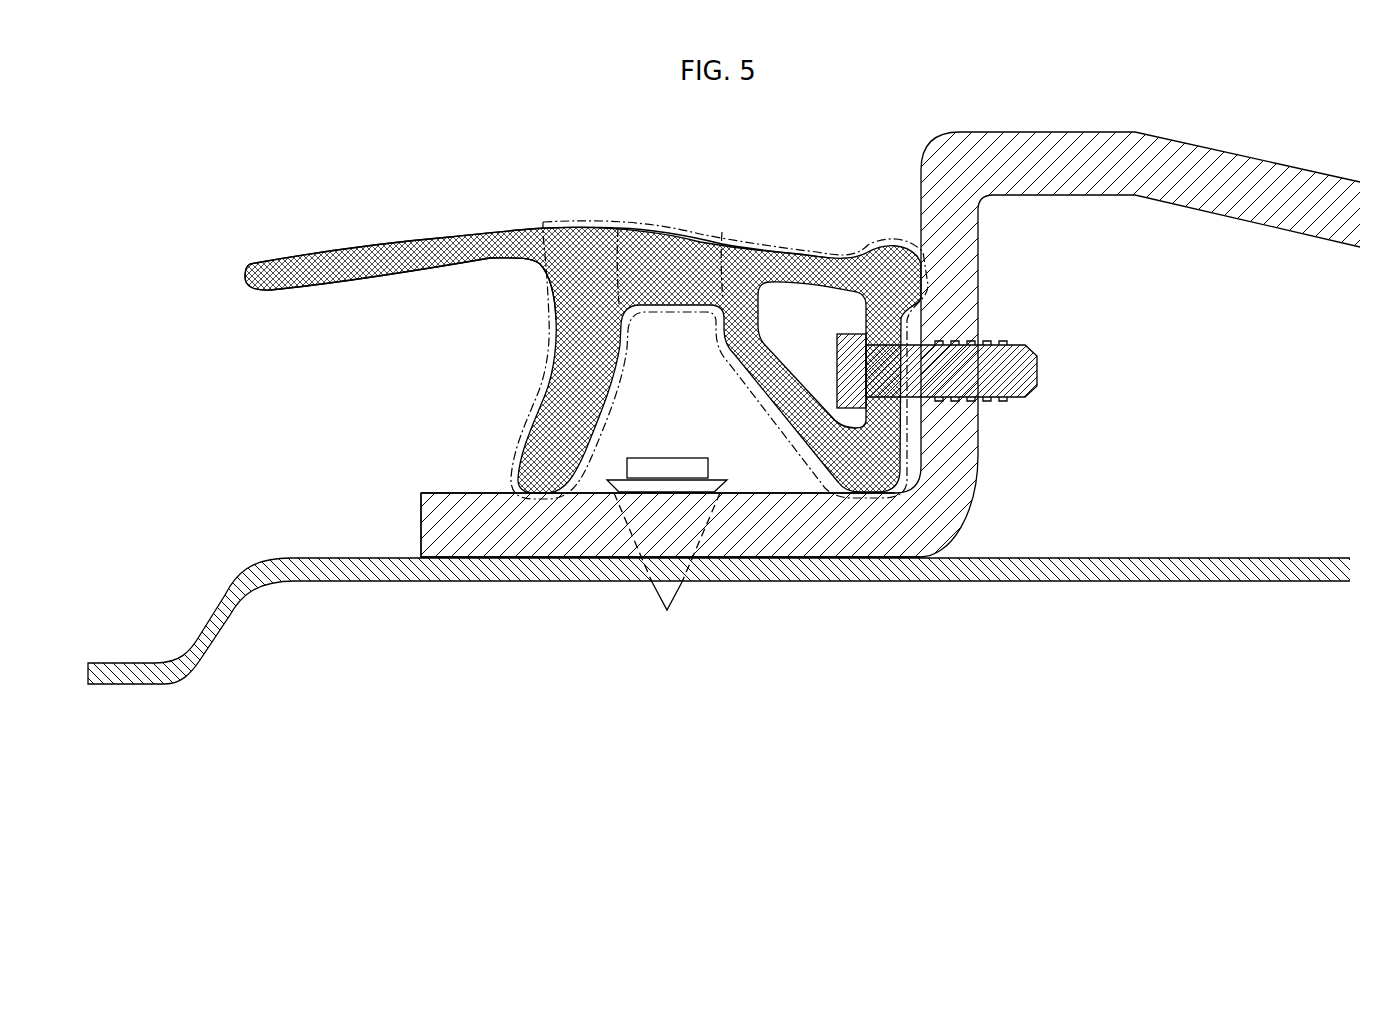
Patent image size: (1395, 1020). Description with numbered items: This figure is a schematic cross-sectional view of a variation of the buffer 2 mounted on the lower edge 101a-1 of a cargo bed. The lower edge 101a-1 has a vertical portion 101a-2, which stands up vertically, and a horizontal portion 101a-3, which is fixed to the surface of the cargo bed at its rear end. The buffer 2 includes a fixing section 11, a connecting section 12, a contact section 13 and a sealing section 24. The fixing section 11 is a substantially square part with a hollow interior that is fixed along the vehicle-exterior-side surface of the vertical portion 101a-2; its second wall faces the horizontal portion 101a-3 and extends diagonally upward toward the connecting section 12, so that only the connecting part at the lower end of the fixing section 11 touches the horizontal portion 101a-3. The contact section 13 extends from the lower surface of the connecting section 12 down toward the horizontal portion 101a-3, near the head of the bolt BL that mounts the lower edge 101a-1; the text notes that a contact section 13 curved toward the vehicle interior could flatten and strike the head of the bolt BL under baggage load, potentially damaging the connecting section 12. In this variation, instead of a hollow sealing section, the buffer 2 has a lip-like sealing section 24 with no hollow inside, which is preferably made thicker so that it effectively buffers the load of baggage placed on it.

The buffer 2 is at (795, 160).
The fixing section 11 is at (823, 243).
The connecting section 12 is at (683, 224).
The contact section 13 is at (578, 222).
The sealing section 24 is at (397, 246).
The bolt BL is at (667, 470).
The lower edge 101a-1 is at (1062, 641).
The vertical portion 101a-2 is at (965, 453).
The horizontal portion 101a-3 is at (787, 530).